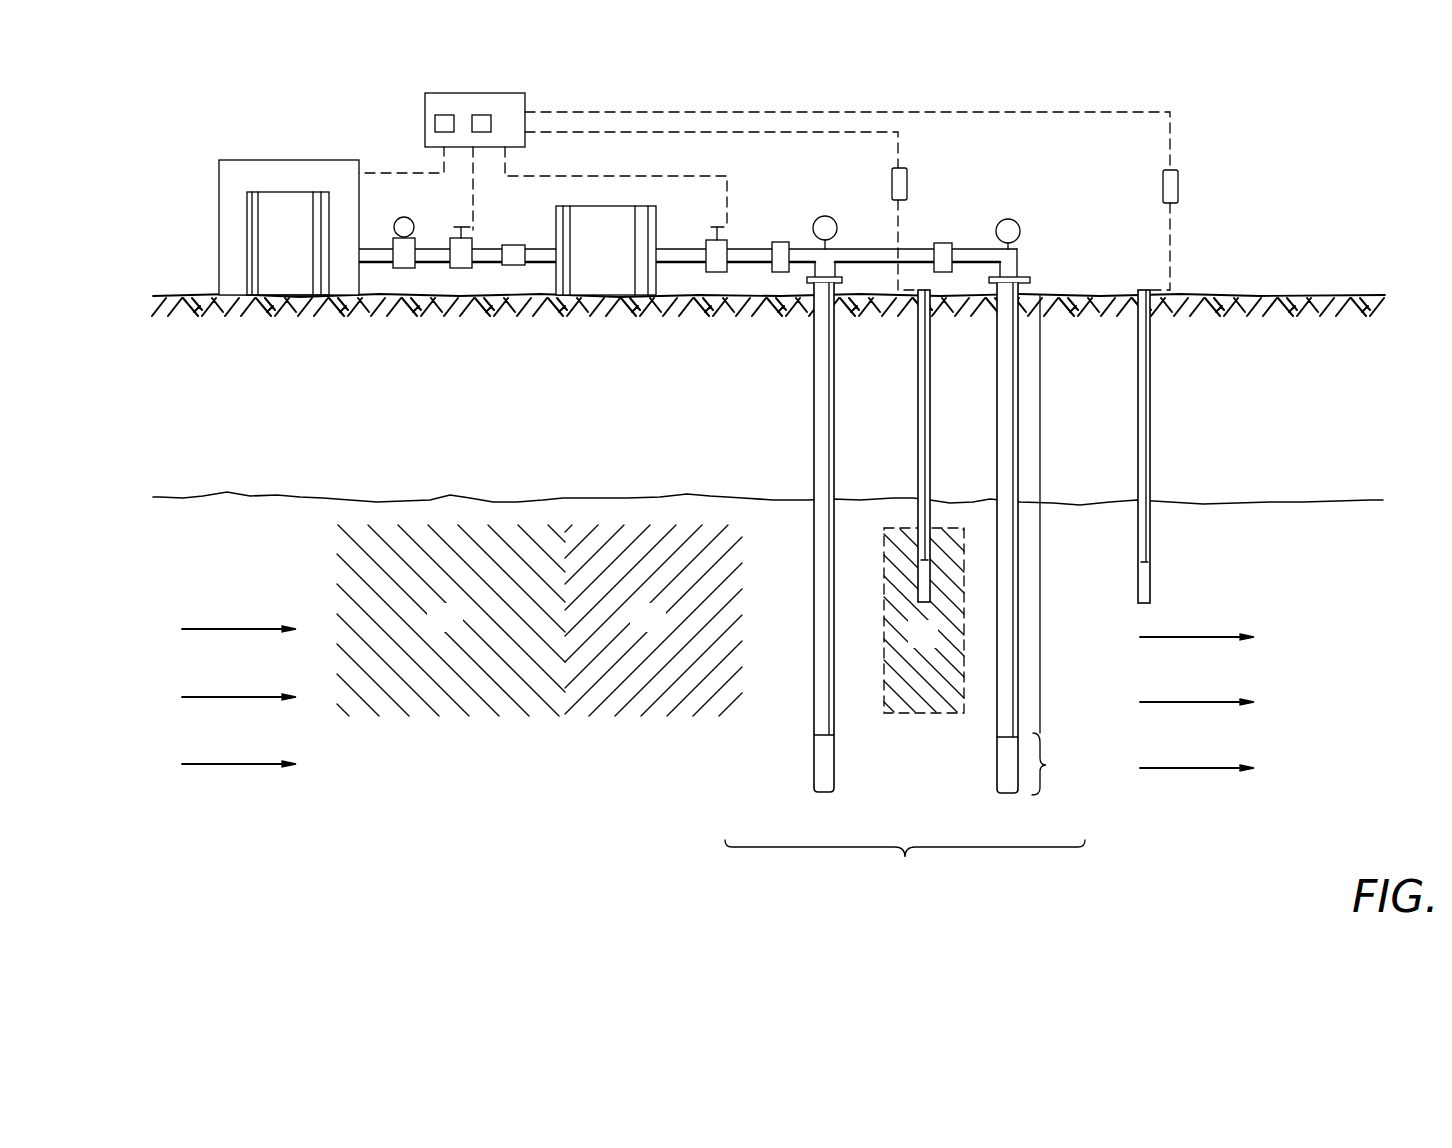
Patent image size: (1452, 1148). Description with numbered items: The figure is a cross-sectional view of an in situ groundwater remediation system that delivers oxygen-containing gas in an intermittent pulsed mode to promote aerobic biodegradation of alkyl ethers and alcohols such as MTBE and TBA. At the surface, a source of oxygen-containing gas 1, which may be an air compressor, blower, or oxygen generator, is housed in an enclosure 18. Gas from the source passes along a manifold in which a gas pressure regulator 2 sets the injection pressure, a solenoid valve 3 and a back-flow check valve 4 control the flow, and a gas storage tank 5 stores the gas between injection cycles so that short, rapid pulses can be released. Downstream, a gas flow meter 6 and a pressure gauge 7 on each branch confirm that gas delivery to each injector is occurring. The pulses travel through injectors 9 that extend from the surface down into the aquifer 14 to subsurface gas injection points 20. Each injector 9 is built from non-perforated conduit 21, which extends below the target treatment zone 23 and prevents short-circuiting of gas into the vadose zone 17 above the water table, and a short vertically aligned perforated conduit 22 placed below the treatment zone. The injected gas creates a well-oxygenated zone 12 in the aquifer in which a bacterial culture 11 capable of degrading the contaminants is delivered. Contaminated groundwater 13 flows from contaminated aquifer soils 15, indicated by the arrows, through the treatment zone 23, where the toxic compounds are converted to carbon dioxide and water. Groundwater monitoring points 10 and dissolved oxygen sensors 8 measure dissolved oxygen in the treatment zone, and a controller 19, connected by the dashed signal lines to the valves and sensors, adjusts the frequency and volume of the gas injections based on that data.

The source of oxygen-containing gas 1 is at (275, 265).
The gas pressure regulator 2 is at (406, 217).
The solenoid valve 3 is at (461, 224).
The back-flow check valve 4 is at (514, 245).
The gas storage tank 5 is at (592, 265).
The gas flow meter 6 is at (781, 242).
The pressure gauge 7 is at (825, 216).
The dissolved oxygen sensor 8 is at (907, 175).
The injector 9 is at (1032, 292).
The groundwater monitoring point 10 is at (930, 380).
The bacterial culture 11 is at (913, 647).
The well-oxygenated zone 12 is at (766, 645).
The contaminated groundwater 13 is at (636, 633).
The aquifer 14 is at (526, 775).
The contaminated aquifer soils 15 is at (433, 633).
The vadose zone 17 is at (453, 413).
The enclosure 18 is at (219, 190).
The controller 19 is at (425, 93).
The subsurface gas injection point 20 is at (832, 772).
The non-perforated conduit 21 is at (1040, 524).
The perforated conduit 22 is at (1046, 765).
The treatment zone 23 is at (905, 866).